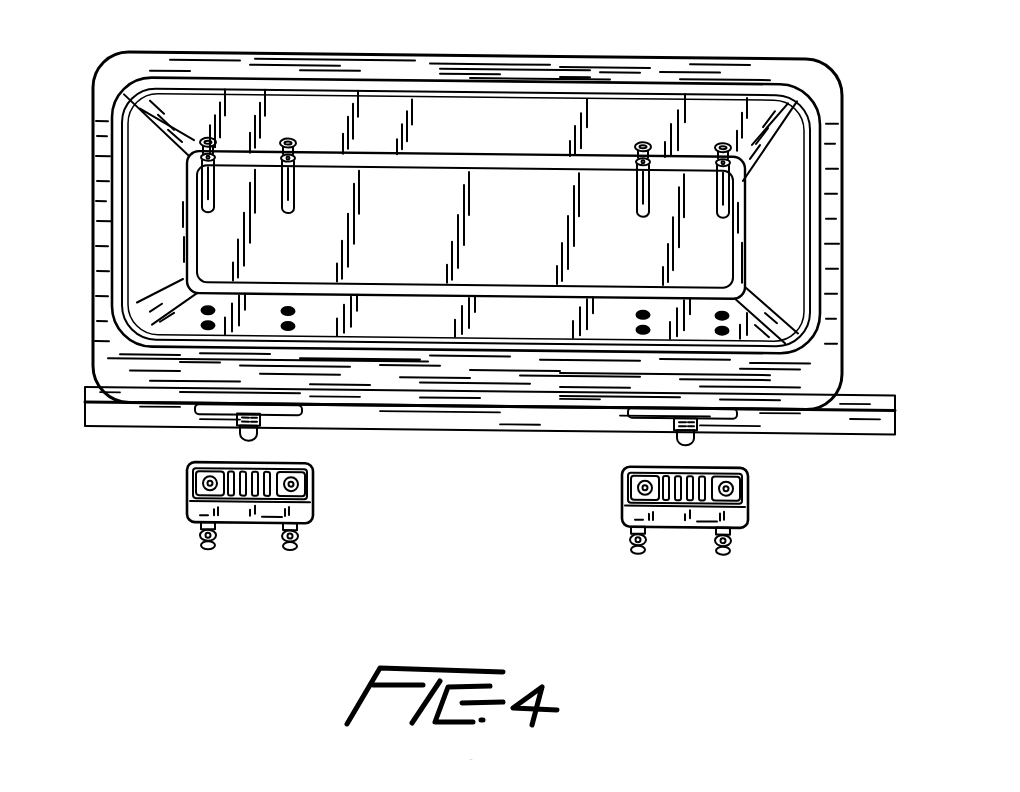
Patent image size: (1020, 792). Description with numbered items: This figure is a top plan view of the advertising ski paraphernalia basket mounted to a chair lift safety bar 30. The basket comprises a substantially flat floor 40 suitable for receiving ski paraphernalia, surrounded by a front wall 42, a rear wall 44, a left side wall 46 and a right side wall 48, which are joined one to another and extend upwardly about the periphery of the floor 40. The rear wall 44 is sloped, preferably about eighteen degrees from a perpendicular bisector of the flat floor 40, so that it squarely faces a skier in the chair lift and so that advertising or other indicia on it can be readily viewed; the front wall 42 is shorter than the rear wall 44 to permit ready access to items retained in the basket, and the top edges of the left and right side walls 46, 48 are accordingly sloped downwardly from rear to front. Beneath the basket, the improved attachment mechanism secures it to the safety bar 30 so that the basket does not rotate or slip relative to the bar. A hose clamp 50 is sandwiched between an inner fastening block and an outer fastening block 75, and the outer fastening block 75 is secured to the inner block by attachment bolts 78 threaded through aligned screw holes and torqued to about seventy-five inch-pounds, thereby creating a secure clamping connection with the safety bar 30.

The safety bar 30 is at (512, 418).
The flat floor 40 is at (442, 200).
The front wall 42 is at (435, 323).
The rear wall 44 is at (626, 120).
The left side wall 46 is at (148, 211).
The right side wall 48 is at (773, 227).
The hose clamp 50 is at (212, 432).
The outer fastening block 75 is at (252, 529).
The attachment bolts 78 is at (208, 551).